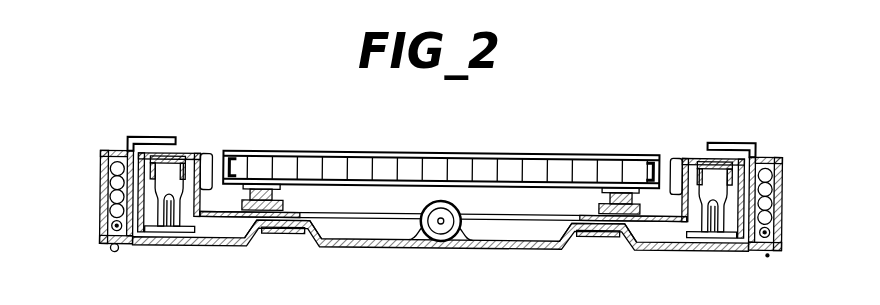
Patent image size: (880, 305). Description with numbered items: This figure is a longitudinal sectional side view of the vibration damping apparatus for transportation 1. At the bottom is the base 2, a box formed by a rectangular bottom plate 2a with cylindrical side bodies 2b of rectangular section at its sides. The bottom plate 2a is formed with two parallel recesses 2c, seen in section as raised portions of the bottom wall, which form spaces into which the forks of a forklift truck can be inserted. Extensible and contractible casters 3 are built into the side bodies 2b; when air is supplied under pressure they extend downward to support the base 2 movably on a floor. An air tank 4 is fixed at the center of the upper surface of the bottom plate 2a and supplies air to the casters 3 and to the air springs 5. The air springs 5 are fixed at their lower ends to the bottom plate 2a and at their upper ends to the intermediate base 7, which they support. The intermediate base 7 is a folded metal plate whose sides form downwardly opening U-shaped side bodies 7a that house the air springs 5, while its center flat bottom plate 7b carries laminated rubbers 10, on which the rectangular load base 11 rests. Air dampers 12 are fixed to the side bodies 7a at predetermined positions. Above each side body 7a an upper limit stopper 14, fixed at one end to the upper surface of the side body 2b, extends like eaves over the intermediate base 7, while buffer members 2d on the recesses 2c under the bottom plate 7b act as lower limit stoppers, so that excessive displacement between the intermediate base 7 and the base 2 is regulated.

The display device 1 is at (181, 112).
The base 2 is at (401, 256).
The bottom plate 2a is at (378, 245).
The cylindrical side bodies 2b is at (100, 187).
The recesses 2c is at (272, 245).
The buffer members 2d is at (300, 231).
The casters 3 is at (109, 226).
The air tank 4 is at (448, 242).
The air springs 5 is at (165, 238).
The intermediate base 7 is at (441, 161).
The U-shaped side bodies 7a is at (182, 152).
The bottom plate 7b is at (297, 208).
The laminated rubbers 10 is at (283, 197).
The load base 11 is at (462, 157).
The air dampers 12 is at (207, 153).
The upper limit stopper 14 is at (143, 137).